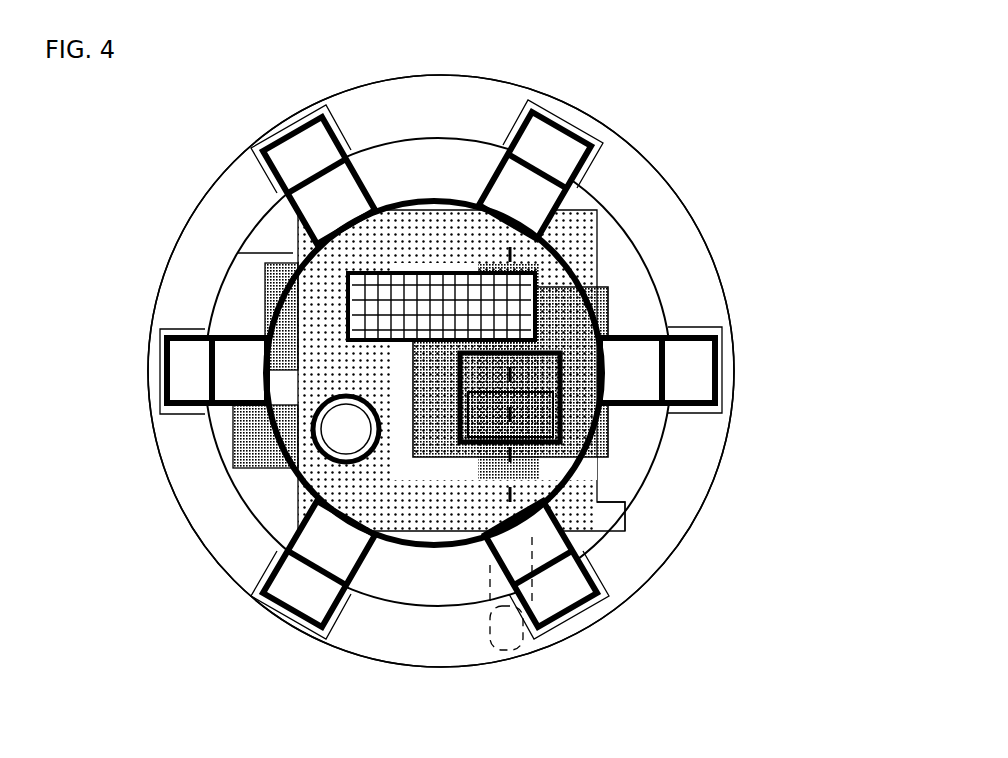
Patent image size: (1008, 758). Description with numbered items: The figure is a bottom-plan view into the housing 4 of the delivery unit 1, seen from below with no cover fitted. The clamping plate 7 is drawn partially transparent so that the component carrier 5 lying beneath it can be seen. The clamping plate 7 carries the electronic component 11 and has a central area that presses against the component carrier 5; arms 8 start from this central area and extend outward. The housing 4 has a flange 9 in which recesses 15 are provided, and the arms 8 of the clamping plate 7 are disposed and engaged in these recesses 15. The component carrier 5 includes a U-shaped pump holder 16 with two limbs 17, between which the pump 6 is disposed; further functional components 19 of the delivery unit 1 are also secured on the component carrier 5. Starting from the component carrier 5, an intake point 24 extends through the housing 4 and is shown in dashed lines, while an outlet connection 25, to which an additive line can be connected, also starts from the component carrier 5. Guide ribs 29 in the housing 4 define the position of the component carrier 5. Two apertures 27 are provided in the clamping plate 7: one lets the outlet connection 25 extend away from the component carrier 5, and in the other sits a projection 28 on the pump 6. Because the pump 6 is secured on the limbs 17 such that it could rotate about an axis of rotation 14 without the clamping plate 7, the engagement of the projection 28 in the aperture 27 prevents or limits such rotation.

The delivery unit 1 is at (130, 182).
The housing 4 is at (612, 152).
The component carrier 5 is at (597, 232).
The pump 6 is at (607, 307).
The clamping plate 7 is at (440, 208).
The arms 8 is at (362, 177).
The flange 9 is at (617, 162).
The electronic component 11 is at (470, 273).
The axis of rotation 14 is at (545, 462).
The recesses 15 is at (580, 127).
The U-shaped pump holder 16 is at (297, 238).
The limbs 17 is at (413, 210).
The functional components 19 is at (265, 292).
The intake point 24 is at (520, 647).
The outlet connection 25 is at (327, 457).
The apertures 27 is at (562, 340).
The projection 28 is at (562, 390).
The guide ribs 29 is at (253, 250).